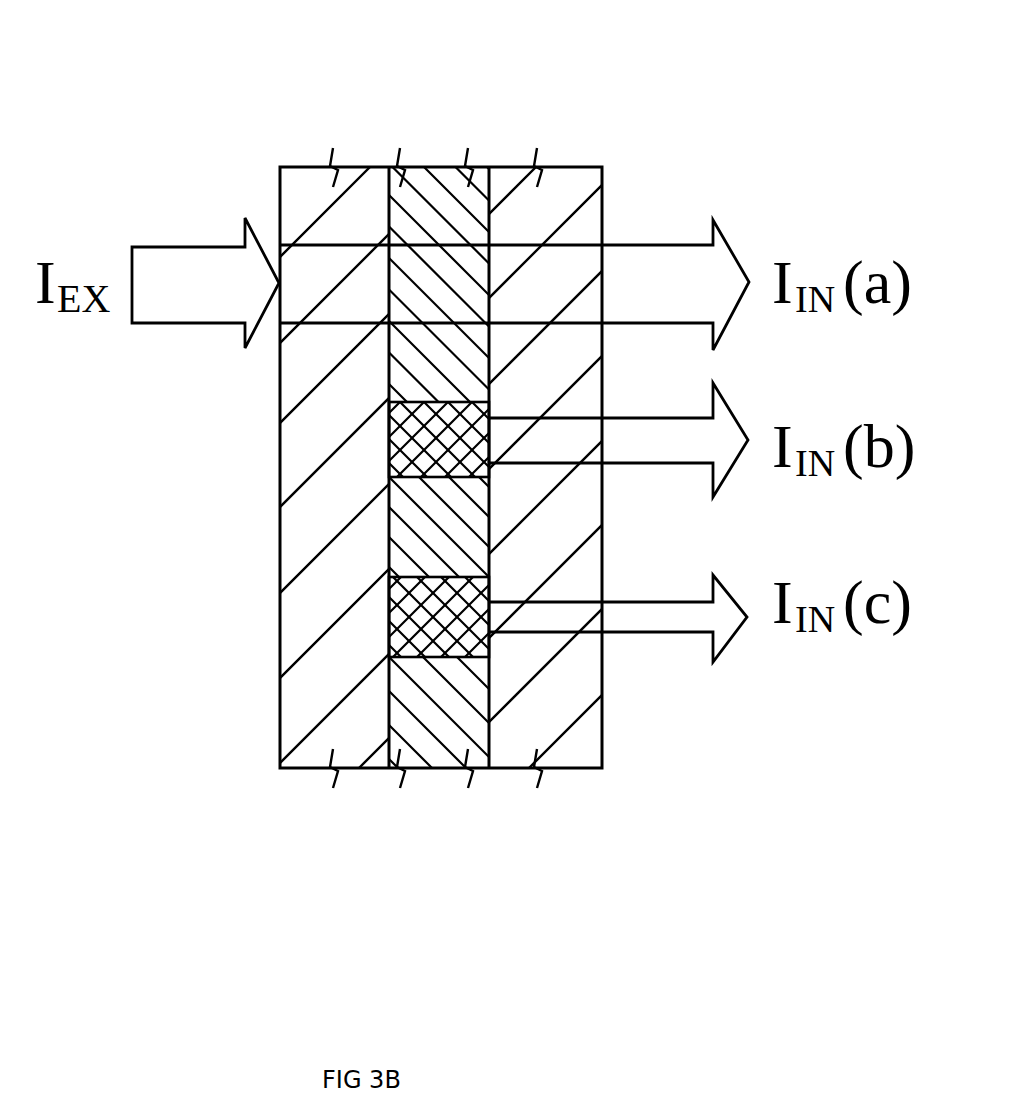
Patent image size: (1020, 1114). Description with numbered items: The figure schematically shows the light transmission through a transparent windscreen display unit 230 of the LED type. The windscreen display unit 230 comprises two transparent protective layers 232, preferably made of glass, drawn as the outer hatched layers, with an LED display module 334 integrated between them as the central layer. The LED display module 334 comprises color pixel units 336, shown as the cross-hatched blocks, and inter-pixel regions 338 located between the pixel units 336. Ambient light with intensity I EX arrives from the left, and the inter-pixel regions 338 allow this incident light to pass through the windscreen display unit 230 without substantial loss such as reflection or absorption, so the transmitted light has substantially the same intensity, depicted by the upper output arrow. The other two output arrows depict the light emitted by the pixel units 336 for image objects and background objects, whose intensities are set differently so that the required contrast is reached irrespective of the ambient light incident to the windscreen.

The windscreen display unit 230 is at (596, 137).
The transparent protective layers 232 is at (353, 753).
The LED display module 334 is at (452, 748).
The color pixel units 336 is at (398, 628).
The inter-pixel regions 338 is at (412, 702).